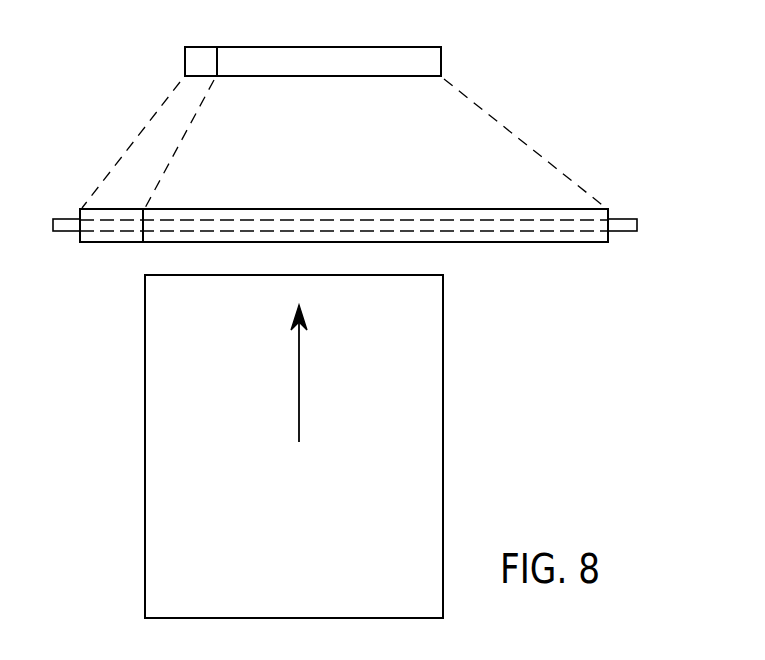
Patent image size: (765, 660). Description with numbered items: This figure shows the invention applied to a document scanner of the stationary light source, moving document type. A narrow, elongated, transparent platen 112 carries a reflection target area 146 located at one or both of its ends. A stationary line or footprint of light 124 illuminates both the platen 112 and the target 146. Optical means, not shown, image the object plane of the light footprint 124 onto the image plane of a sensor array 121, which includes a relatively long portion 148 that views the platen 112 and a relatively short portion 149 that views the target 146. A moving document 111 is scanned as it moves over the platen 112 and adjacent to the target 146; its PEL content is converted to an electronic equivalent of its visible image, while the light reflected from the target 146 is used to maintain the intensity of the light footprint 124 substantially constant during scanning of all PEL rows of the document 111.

The moving document 111 is at (443, 385).
The platen 112 is at (537, 242).
The sensor array 121 is at (362, 47).
The light footprint 124 is at (628, 218).
The reflection target area 146 is at (112, 242).
The relatively long portion 148 is at (353, 65).
The relatively short portion 149 is at (198, 47).